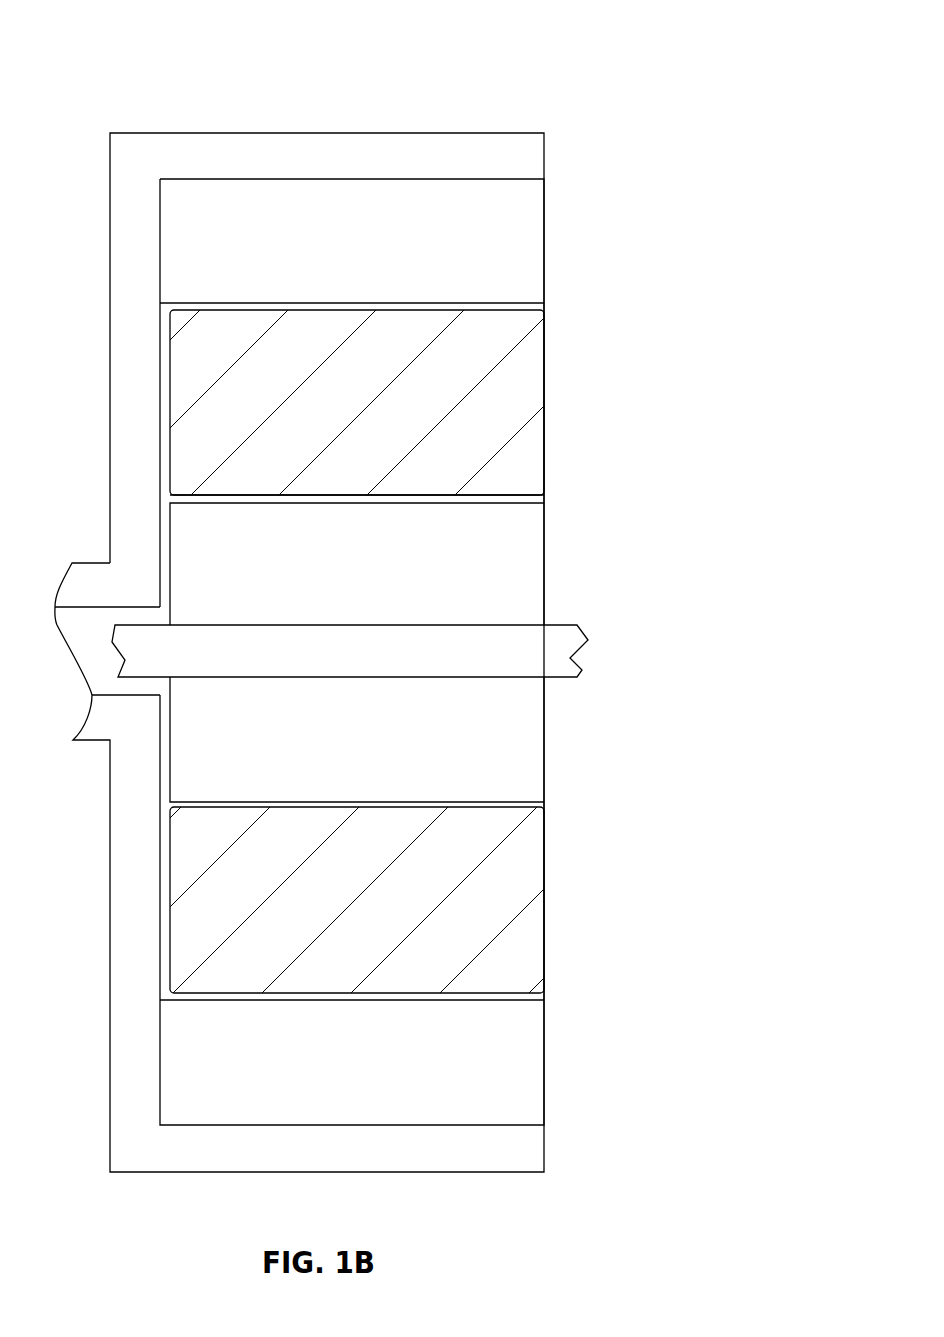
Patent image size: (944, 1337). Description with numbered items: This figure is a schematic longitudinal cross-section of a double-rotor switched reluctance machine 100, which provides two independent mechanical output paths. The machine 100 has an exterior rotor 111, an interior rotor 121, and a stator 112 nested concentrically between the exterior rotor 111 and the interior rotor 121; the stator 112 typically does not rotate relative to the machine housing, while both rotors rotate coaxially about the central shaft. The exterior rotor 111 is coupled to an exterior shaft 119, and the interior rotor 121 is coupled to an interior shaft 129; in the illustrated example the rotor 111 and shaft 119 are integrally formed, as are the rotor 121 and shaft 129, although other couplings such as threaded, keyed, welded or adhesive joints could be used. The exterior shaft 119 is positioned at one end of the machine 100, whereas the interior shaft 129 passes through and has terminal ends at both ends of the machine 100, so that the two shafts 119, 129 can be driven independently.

The double-rotor switched reluctance machine 100 is at (568, 59).
The exterior rotor 111 is at (514, 220).
The stator 112 is at (523, 382).
The exterior shaft 119 is at (98, 582).
The interior rotor 121 is at (521, 551).
The interior shaft 129 is at (560, 657).